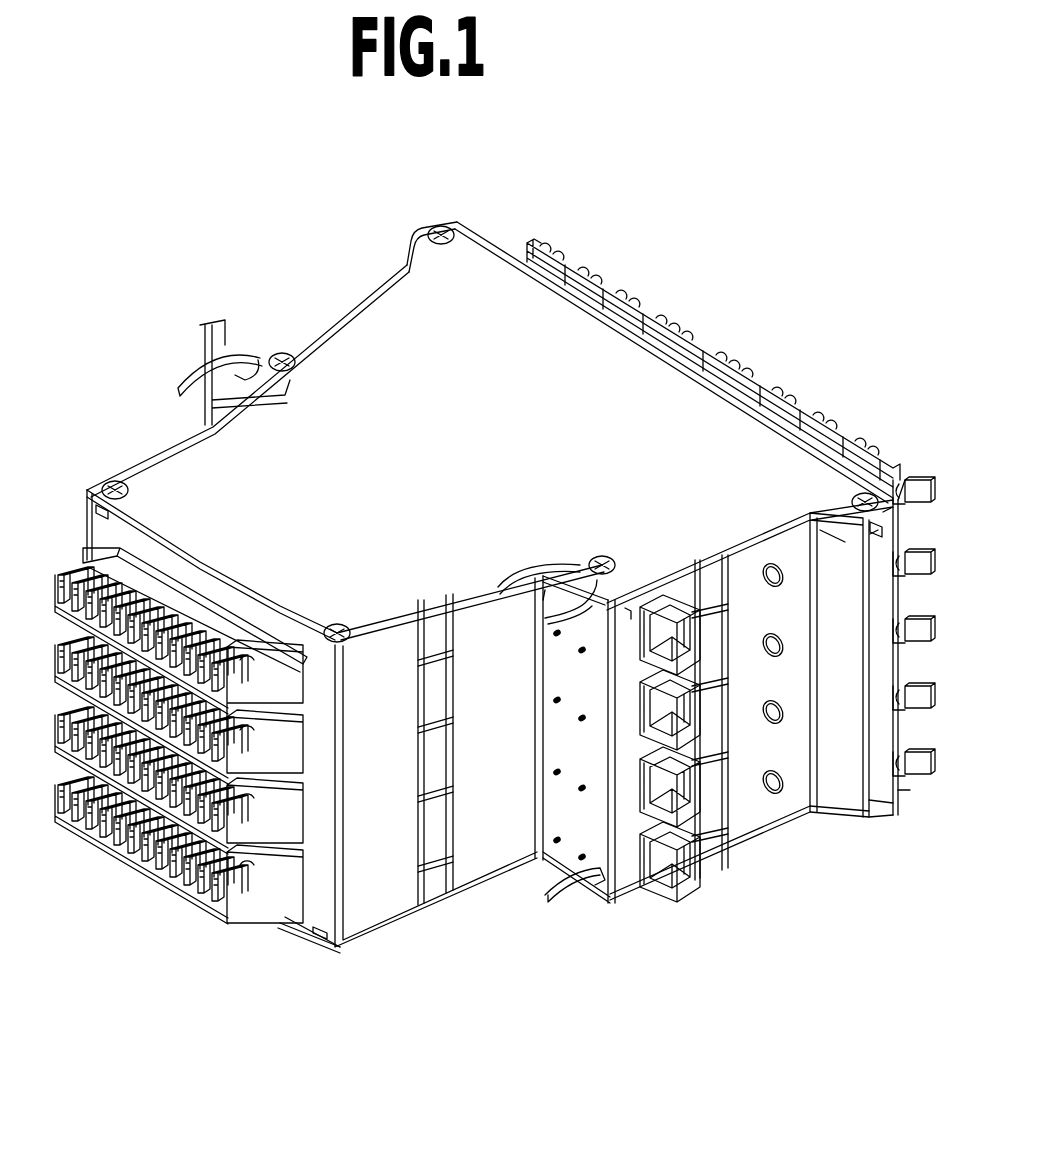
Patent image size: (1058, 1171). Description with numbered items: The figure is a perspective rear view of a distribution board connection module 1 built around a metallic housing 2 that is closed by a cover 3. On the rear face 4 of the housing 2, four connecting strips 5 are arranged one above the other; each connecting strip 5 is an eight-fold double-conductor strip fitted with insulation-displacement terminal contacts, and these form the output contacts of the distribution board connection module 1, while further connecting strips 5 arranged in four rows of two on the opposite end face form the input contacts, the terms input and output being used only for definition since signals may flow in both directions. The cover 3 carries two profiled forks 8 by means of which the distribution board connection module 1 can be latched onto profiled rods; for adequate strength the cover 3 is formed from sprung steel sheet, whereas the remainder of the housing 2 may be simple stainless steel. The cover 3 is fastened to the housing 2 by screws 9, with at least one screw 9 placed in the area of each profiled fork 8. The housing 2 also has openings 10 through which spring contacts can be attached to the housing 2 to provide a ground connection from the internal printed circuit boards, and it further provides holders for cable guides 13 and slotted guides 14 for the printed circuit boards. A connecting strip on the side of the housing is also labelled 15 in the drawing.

The distribution board connection module 1 is at (738, 314).
The housing 2 is at (480, 835).
The cover 3 is at (392, 310).
The rear face 4 is at (322, 905).
The connecting strip 5 is at (560, 252).
The profiled fork 8 is at (195, 370).
The screw 9 is at (441, 226).
The opening 10 is at (598, 860).
The cable guide 13 is at (692, 880).
The slotted guide 14 is at (436, 870).
The terminal strip 15 is at (920, 740).